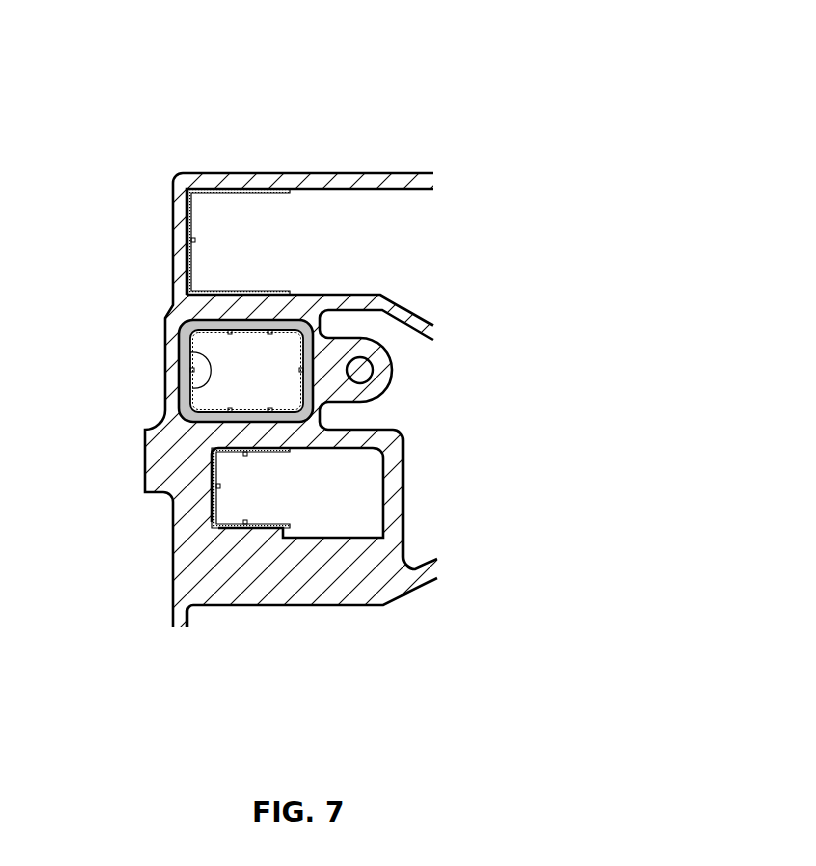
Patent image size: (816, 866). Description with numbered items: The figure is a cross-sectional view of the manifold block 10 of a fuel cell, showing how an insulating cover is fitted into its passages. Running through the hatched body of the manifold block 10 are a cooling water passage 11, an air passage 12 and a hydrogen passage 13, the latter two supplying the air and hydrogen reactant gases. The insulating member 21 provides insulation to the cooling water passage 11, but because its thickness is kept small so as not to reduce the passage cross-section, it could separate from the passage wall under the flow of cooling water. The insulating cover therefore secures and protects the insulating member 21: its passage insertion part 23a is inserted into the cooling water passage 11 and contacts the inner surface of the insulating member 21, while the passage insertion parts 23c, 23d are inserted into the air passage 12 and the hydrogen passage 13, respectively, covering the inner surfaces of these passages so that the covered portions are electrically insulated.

The manifold block 10 is at (392, 128).
The cooling water passage 11 is at (278, 350).
The air passage 12 is at (237, 222).
The hydrogen passage 13 is at (358, 492).
The insulating member 21 is at (180, 453).
The passage insertion part 23a is at (185, 384).
The passage insertion part 23c is at (195, 229).
The passage insertion part 23d is at (213, 500).